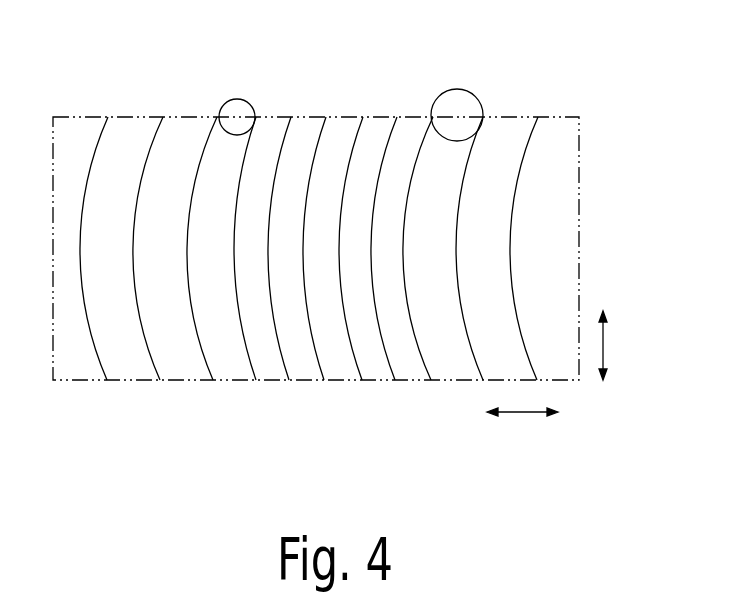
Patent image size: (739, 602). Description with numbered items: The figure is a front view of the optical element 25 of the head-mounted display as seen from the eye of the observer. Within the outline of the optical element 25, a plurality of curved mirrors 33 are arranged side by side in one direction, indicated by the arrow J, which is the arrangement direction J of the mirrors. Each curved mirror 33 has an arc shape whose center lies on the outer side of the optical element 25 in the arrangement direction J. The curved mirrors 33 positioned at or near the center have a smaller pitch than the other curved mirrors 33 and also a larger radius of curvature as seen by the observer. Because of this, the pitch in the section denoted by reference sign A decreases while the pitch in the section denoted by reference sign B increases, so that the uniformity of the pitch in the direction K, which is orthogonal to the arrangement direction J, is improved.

The optical element 25 is at (358, 92).
The curved mirrors 33 is at (129, 131).
The section A is at (233, 97).
The section B is at (457, 88).
The direction K is at (604, 352).
The arrangement direction J is at (513, 414).